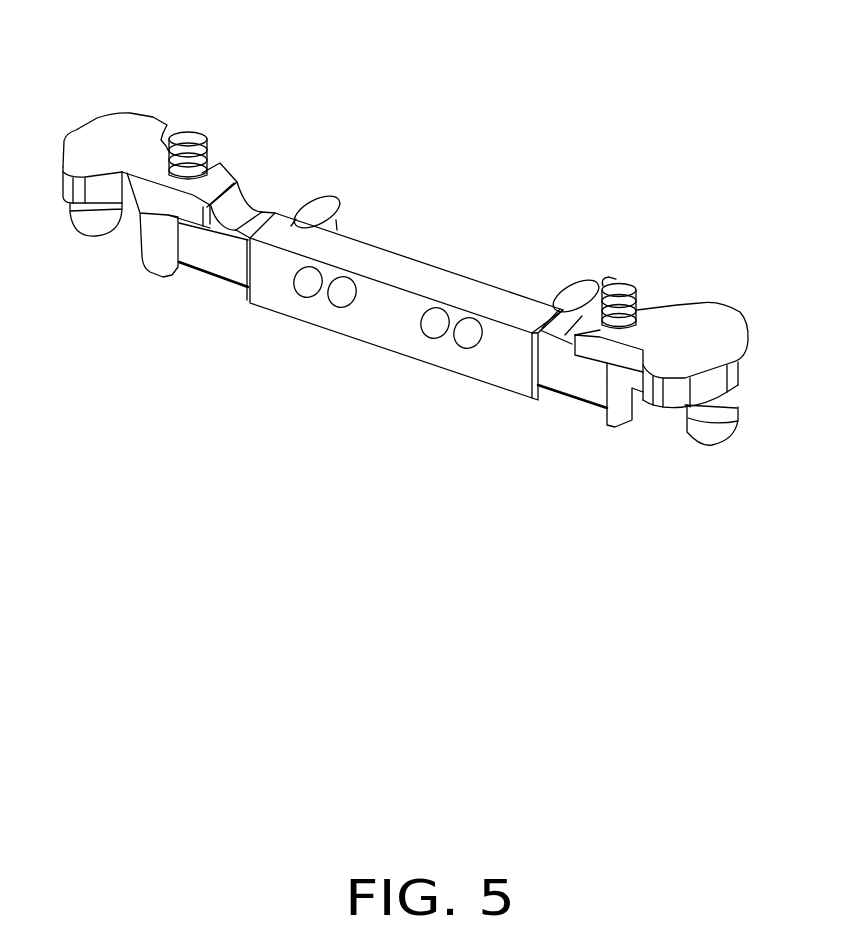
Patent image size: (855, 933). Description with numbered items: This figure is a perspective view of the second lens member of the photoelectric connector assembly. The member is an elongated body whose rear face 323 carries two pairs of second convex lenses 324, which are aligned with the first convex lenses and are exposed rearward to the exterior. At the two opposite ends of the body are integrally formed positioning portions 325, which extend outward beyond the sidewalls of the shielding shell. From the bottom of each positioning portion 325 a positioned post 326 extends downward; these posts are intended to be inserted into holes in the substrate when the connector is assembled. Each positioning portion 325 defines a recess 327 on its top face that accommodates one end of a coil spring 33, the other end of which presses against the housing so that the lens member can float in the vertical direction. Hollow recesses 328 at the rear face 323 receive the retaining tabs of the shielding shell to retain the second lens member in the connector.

The rear face 323 is at (318, 307).
The second convex lenses 324 is at (468, 335).
The positioning portion 325 is at (693, 348).
The positioned post 326 is at (708, 407).
The recess 327 is at (95, 127).
The hollow recess 328 is at (582, 378).
The coil spring 33 is at (185, 133).